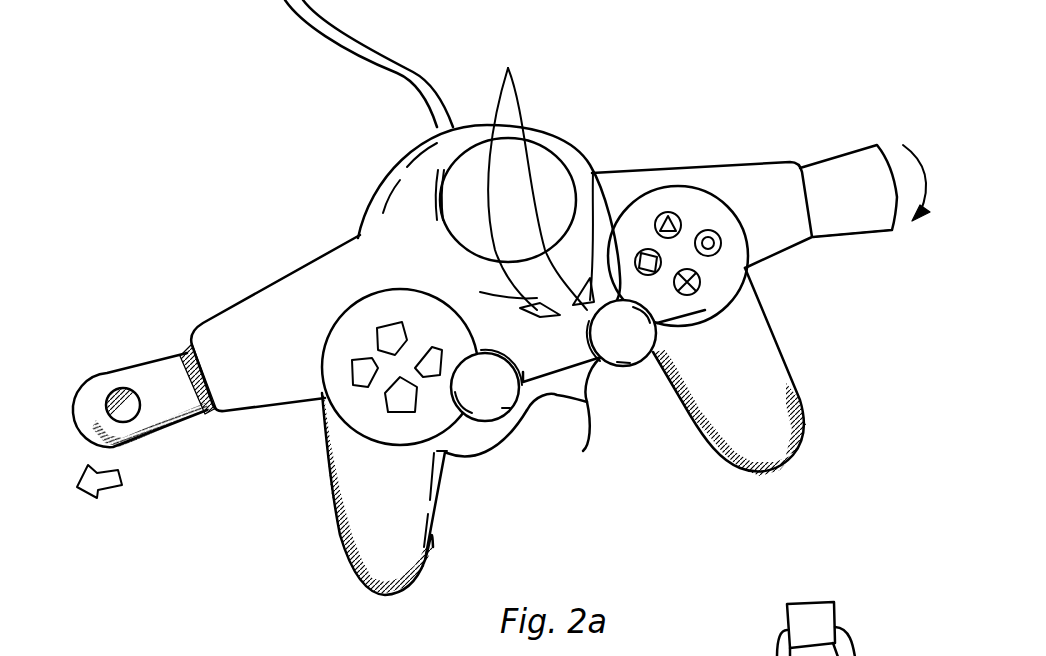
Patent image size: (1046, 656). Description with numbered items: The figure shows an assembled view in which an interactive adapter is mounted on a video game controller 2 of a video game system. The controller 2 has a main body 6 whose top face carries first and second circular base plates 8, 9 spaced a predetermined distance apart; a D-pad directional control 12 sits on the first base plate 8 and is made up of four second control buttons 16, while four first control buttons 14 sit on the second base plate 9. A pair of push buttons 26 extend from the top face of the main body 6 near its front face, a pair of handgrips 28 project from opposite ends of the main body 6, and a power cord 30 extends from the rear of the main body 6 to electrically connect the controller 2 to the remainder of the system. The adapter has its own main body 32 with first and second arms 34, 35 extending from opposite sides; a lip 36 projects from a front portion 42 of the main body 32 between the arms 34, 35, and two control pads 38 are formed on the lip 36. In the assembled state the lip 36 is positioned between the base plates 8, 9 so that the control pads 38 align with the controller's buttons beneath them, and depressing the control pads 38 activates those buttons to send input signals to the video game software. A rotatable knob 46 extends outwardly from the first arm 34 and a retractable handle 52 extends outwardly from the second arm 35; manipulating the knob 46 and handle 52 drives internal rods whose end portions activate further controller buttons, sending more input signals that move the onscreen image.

The video game controller 2 is at (382, 592).
The main body 6 is at (426, 474).
The first circular base plate 8 is at (334, 342).
The second circular base plate 9 is at (640, 222).
The D-pad directional control 12 is at (388, 327).
The first control buttons 14 is at (697, 291).
The second control buttons 16 is at (357, 375).
The push buttons 26 is at (527, 410).
The handgrips 28 is at (728, 468).
The power cord 30 is at (398, 71).
The main body 32 is at (398, 207).
The first arm 34 is at (733, 170).
The second arm 35 is at (247, 401).
The lip 36 is at (597, 175).
The control pads 38 is at (541, 173).
The front portion 42 is at (795, 235).
The rotatable knob 46 is at (832, 168).
The retractable handle 52 is at (148, 443).